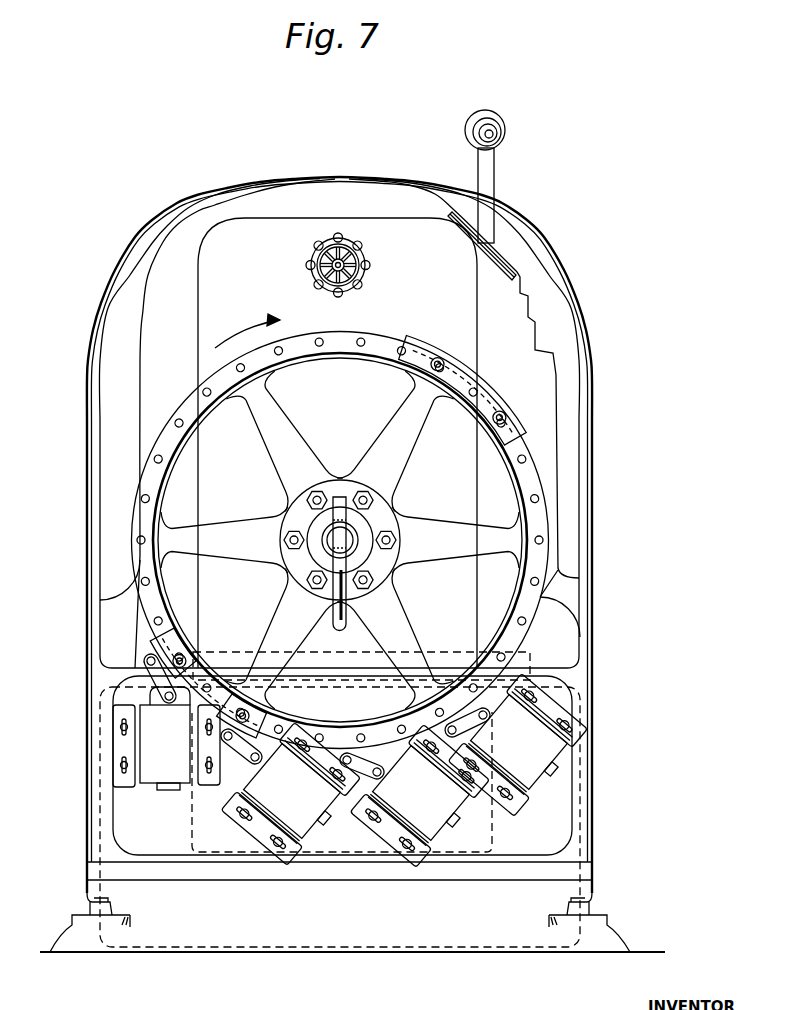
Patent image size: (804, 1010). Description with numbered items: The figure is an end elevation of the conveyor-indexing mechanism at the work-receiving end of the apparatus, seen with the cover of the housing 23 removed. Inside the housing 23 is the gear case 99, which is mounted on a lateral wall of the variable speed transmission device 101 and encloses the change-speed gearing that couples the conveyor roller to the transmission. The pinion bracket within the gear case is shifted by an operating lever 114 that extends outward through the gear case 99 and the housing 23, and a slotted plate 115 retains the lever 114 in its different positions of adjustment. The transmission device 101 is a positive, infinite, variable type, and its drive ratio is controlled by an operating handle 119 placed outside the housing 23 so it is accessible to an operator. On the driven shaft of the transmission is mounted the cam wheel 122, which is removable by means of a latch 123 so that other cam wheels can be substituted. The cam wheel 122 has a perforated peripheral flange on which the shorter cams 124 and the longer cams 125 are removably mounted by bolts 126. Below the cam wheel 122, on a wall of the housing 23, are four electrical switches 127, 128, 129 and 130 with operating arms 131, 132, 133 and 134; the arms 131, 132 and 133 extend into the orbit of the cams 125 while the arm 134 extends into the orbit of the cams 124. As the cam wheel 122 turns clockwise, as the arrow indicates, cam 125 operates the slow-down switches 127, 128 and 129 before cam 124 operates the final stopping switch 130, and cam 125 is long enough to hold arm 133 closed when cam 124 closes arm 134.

The housing 23 is at (593, 425).
The gear case 99 is at (285, 193).
The variable speed transmission device 101 is at (380, 233).
The operating lever 114 is at (490, 172).
The slotted plate 115 is at (508, 256).
The operating handle 119 is at (356, 271).
The cam wheel 122 is at (352, 338).
The latch 123 is at (340, 492).
The cam 124 is at (521, 432).
The cam 125 is at (438, 352).
The bolt 126 is at (430, 366).
The electrical switch 127 is at (526, 782).
The electrical switch 128 is at (430, 848).
The electrical switch 129 is at (300, 842).
The electrical switch 130 is at (163, 771).
The operating arm 131 is at (455, 724).
The operating arm 132 is at (352, 755).
The operating arm 133 is at (235, 764).
The operating arm 134 is at (155, 656).